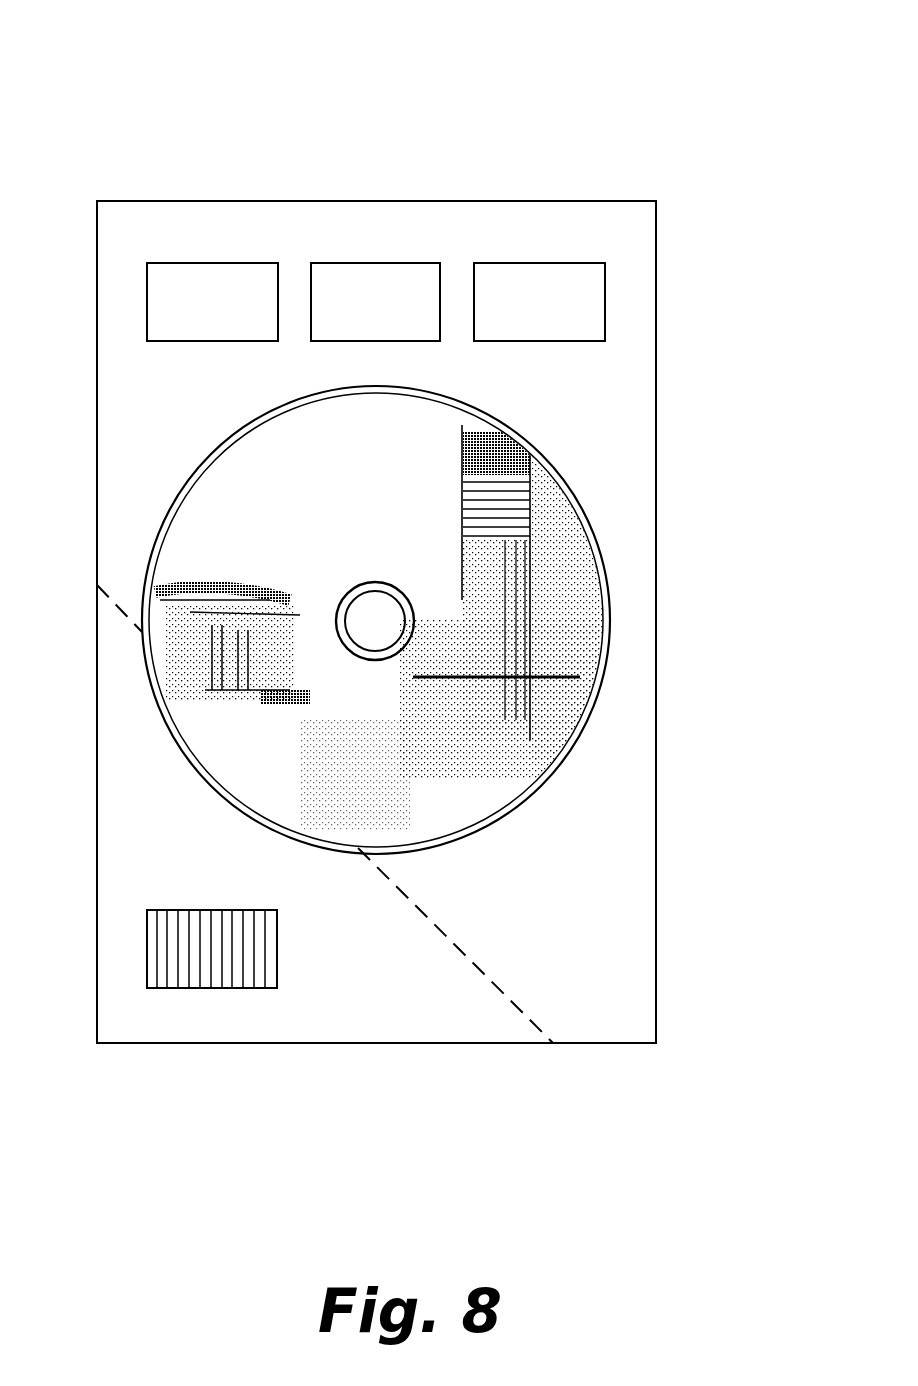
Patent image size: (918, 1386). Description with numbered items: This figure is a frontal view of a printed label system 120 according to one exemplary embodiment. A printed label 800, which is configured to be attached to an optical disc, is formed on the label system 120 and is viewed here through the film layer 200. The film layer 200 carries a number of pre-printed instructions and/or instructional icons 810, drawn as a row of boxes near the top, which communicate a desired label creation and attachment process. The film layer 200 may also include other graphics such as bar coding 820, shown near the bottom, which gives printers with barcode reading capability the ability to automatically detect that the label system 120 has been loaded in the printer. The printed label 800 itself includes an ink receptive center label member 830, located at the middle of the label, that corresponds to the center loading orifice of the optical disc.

The label system 120 is at (84, 100).
The film layer 200 is at (633, 235).
The pre-printed instructions and/or instructional icons 810 is at (377, 280).
The printed label 800 is at (563, 575).
The center label member 830 is at (413, 620).
The bar coding 820 is at (206, 977).